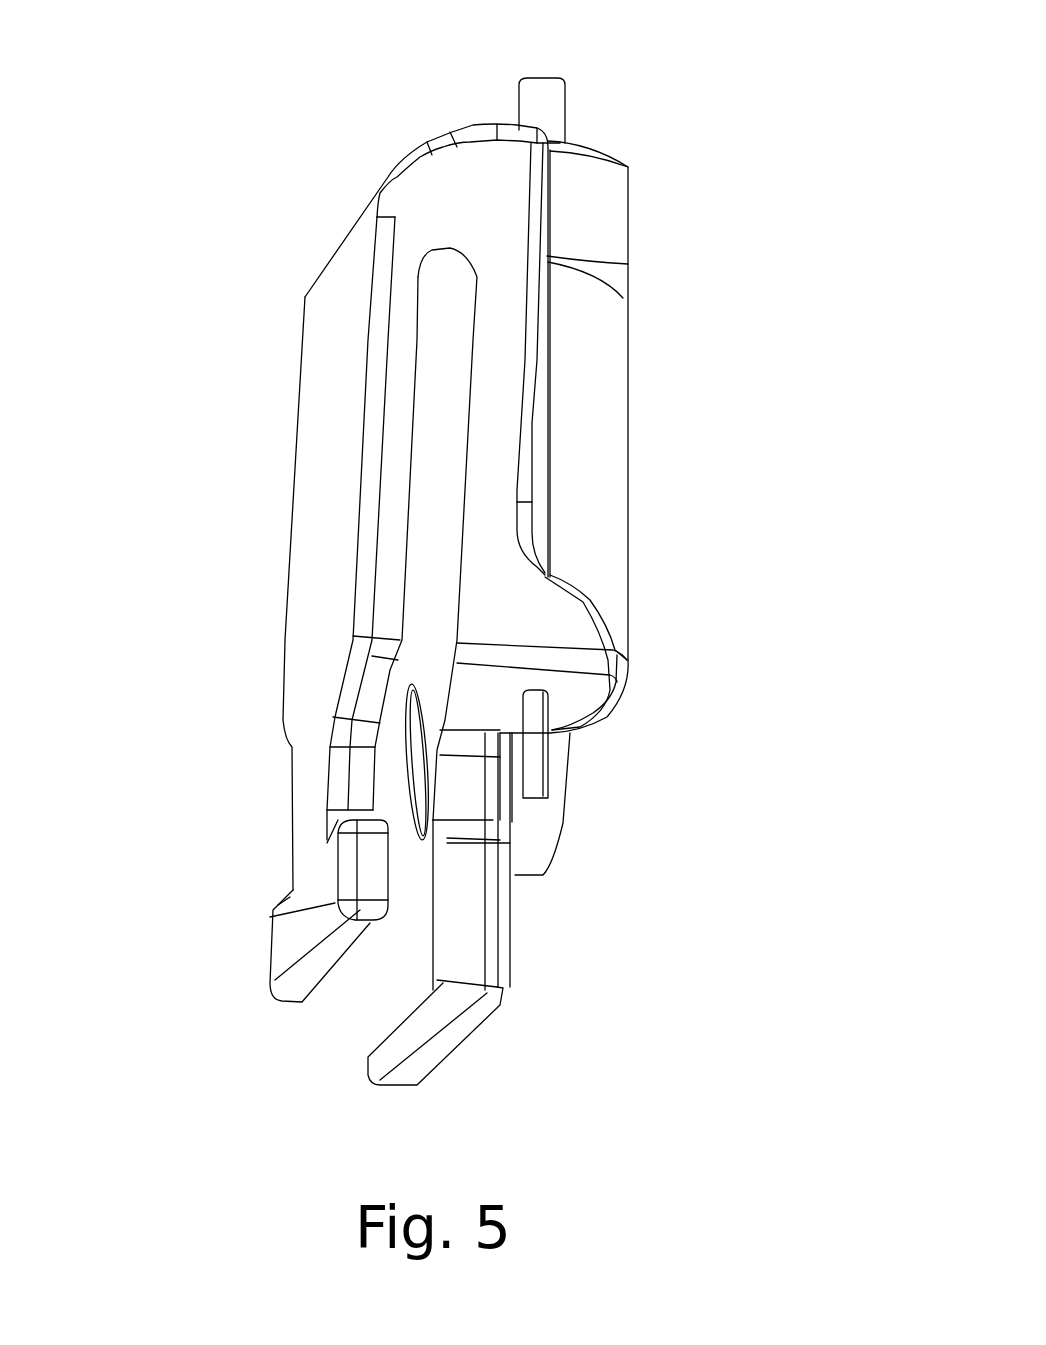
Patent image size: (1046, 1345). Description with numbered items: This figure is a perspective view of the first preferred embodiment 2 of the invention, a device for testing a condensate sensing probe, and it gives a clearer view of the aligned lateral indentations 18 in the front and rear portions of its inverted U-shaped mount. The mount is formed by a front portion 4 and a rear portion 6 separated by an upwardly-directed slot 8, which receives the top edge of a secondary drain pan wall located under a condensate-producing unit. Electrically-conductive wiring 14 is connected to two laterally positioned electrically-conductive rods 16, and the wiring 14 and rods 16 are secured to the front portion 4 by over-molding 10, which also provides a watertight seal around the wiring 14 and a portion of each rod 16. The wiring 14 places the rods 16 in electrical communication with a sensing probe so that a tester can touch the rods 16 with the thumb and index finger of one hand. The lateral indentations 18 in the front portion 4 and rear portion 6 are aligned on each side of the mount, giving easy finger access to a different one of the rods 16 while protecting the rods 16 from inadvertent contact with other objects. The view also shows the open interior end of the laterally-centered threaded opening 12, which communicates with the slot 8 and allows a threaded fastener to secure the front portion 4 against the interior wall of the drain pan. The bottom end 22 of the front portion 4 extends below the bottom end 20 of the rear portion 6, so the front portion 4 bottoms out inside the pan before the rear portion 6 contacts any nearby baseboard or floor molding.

The first preferred embodiment 2 is at (160, 60).
The front portion 4 is at (498, 437).
The rear portion 6 is at (313, 337).
The slot 8 is at (428, 397).
The over-molding 10 is at (608, 217).
The threaded opening 12 is at (417, 718).
The electrically-conductive wiring 14 is at (553, 107).
The electrically-conductive rods 16 is at (537, 762).
The lateral indentations 18 is at (432, 780).
The bottom end of the rear portion 20 is at (280, 958).
The bottom end of the front portion 22 is at (452, 1020).